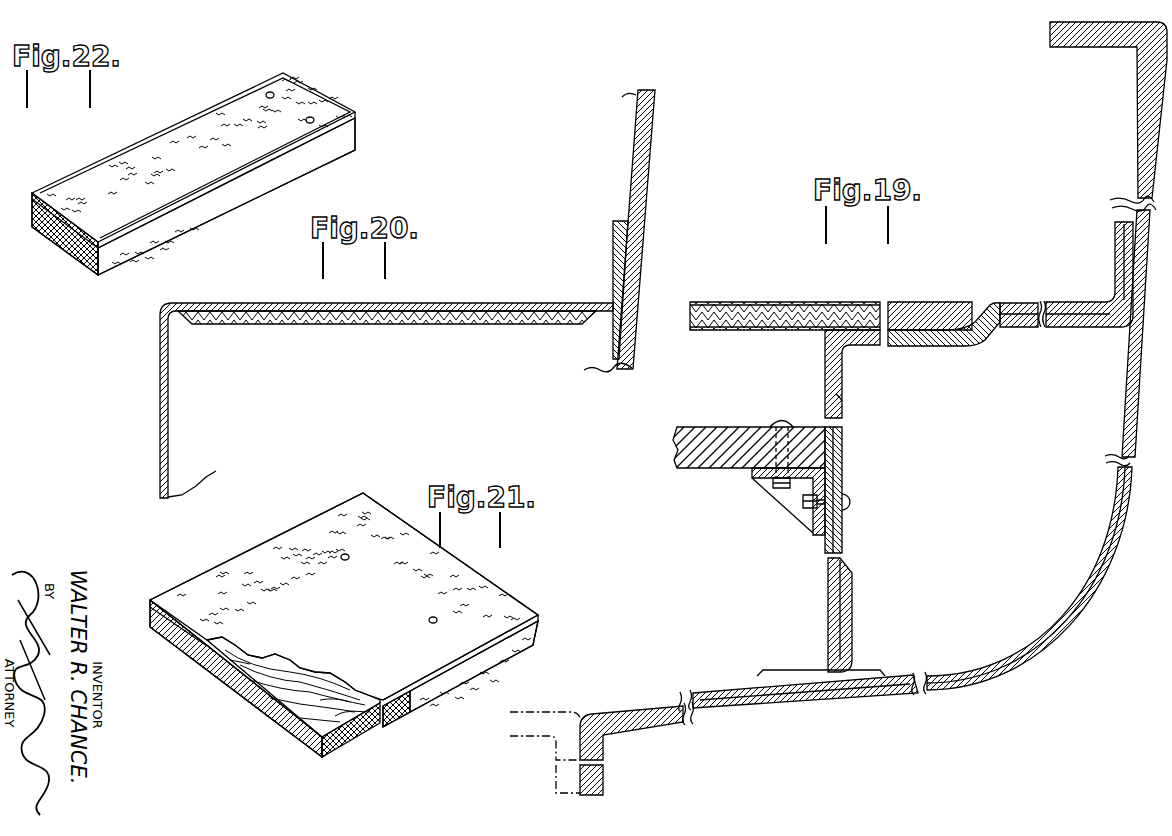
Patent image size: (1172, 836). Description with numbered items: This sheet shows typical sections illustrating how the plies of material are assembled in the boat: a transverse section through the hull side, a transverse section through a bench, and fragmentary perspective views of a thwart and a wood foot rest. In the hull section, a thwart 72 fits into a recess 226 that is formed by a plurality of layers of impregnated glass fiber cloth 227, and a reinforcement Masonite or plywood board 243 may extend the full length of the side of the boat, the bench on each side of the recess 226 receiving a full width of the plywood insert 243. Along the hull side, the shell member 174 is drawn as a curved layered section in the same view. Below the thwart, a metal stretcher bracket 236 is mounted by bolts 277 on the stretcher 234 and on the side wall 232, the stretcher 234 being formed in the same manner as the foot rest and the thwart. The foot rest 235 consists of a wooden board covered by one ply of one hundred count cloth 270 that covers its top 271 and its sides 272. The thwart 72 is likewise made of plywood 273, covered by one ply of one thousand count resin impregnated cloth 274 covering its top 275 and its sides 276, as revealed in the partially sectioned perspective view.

In FIG. 21, the thwart 72 is at (540, 624).
In FIG. 19, the thwart 72 is at (752, 300).
In FIG. 20, the body shell member 174 is at (637, 372).
In FIG. 19, the body shell member 174 is at (1002, 667).
In FIG. 19, the recess 226 is at (932, 348).
In FIG. 19, the layers of impregnated glass fiber cloth 227 is at (891, 348).
In FIG. 19, the side wall 232 is at (848, 537).
In FIG. 19, the stretcher 234 is at (722, 470).
In FIG. 22, the foot rest 235 is at (82, 262).
In FIG. 19, the stretcher bracket 236 is at (790, 513).
In FIG. 20, the reinforcement board 243 is at (481, 326).
In FIG. 19, the reinforcement board 243 is at (1042, 330).
In FIG. 22, the cloth ply 270 is at (342, 143).
In FIG. 22, the top of foot rest 271 is at (307, 92).
In FIG. 22, the sides of foot rest 272 is at (217, 210).
In FIG. 21, the plywood 273 is at (297, 733).
In FIG. 21, the resin impregnated cloth ply 274 is at (447, 678).
In FIG. 21, the top of thwart 275 is at (470, 598).
In FIG. 21, the sides of thwart 276 is at (403, 717).
In FIG. 19, the bolt 277 is at (782, 424).